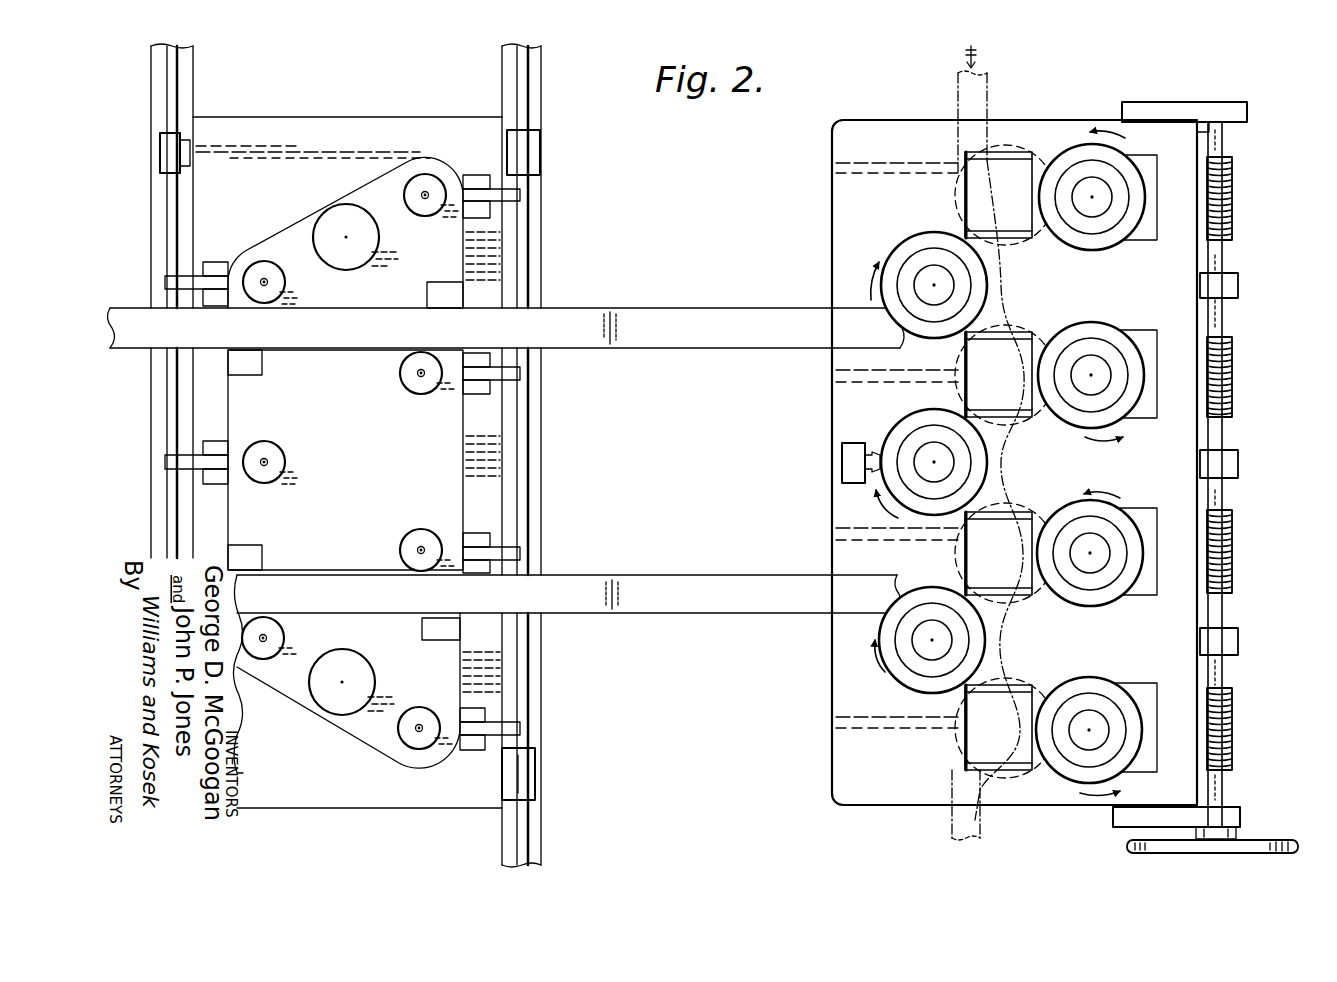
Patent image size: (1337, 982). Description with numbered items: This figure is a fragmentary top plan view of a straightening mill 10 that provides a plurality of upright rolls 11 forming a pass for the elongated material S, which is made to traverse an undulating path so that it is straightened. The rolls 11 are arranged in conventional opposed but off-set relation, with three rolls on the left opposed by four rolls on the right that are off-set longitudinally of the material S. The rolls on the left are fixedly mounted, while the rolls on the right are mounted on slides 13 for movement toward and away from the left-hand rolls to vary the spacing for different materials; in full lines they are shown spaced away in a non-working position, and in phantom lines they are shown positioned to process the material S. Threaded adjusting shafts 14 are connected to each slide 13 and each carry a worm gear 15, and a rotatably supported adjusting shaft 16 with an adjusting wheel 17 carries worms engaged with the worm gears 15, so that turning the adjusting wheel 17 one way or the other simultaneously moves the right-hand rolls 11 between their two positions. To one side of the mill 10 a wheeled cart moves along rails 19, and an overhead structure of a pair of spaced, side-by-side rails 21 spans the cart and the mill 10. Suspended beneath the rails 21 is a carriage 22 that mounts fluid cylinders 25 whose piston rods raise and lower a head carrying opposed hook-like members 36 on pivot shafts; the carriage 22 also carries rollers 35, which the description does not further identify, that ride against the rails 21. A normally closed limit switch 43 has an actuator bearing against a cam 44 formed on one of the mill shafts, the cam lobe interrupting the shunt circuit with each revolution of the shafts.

The mill 10 is at (818, 662).
The upright rolls 11 is at (1012, 152).
The slides 13 is at (1040, 232).
The threaded adjusting shafts 14 is at (1230, 188).
The worm gear 15 is at (1232, 210).
The adjusting shaft 16 is at (1215, 673).
The adjusting wheel 17 is at (1130, 848).
The rails 19 is at (183, 82).
The rails 21 is at (708, 316).
The carriage 22 is at (342, 535).
The fluid cylinders 25 is at (308, 236).
The idler rollers 35 is at (432, 172).
The hook-like members 36 is at (170, 282).
The limit switch 43 is at (842, 475).
The cam 44 is at (868, 455).
The elongated material S is at (958, 90).